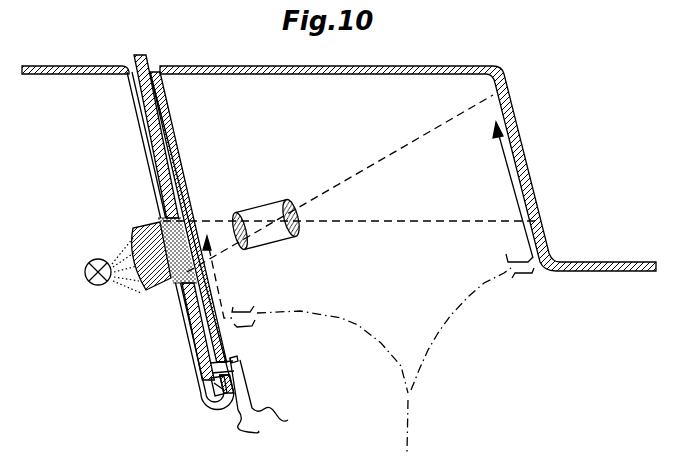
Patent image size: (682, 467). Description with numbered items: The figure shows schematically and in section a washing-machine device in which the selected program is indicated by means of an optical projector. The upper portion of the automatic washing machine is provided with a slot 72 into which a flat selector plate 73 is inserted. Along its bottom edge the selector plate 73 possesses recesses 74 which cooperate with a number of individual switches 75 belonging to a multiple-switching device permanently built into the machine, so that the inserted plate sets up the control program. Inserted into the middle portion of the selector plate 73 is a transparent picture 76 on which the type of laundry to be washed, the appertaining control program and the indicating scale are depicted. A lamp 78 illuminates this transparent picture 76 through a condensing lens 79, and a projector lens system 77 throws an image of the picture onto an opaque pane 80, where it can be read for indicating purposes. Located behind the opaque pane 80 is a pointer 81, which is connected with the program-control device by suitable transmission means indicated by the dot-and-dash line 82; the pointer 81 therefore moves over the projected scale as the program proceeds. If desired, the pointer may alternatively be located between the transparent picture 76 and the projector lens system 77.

The slot 72 is at (138, 88).
The selector plate 73 is at (155, 118).
The recesses 74 is at (218, 397).
The individual switches 75 is at (250, 388).
The transparent picture 76 is at (186, 228).
The projector lens system 77 is at (259, 210).
The lamp 78 is at (91, 262).
The condensing lens 79 is at (141, 231).
The opaque pane 80 is at (510, 132).
The pointer 81 is at (507, 176).
The dot-and-dash line 82 is at (439, 331).